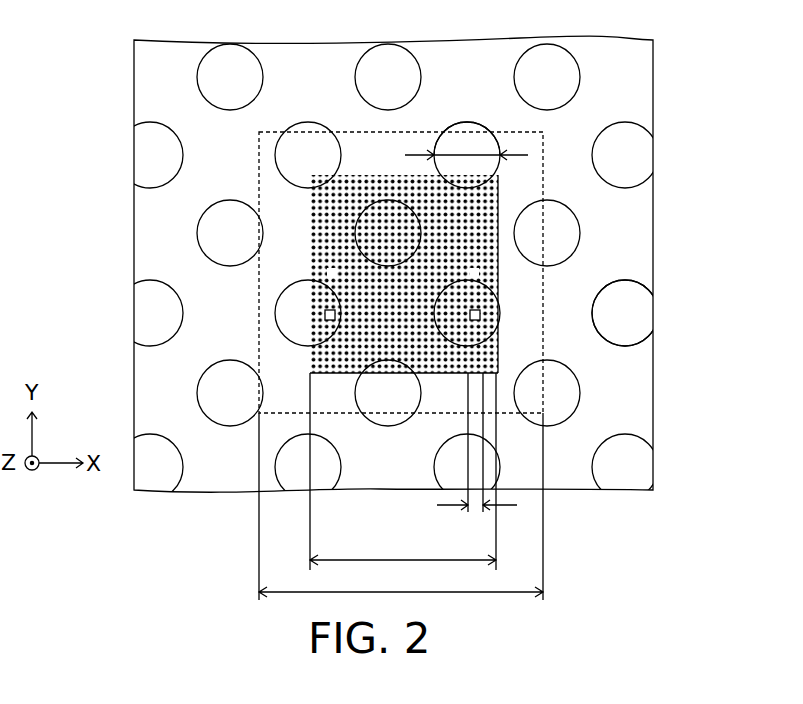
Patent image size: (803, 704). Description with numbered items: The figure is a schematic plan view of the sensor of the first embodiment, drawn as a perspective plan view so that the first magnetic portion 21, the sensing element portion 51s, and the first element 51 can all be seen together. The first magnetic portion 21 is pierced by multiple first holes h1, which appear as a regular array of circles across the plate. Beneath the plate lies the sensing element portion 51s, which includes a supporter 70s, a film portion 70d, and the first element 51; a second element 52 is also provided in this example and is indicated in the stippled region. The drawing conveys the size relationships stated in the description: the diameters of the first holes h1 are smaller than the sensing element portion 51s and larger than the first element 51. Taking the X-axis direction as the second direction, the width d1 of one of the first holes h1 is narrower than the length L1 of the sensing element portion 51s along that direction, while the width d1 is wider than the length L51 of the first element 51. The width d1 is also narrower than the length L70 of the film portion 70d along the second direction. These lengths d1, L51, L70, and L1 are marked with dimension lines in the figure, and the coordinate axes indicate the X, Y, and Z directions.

The first magnetic portion 21 is at (623, 72).
The first element 51 is at (508, 230).
The second element 52 is at (318, 232).
The first holes h1 is at (497, 140).
The width of first hole d1 is at (468, 155).
The supporter 70s is at (528, 293).
The sensing element portion 51s is at (545, 333).
The film portion 70d is at (500, 348).
The length of first element L51 is at (478, 500).
The length of film portion L70 is at (403, 471).
The length of sensing element portion L1 is at (401, 506).